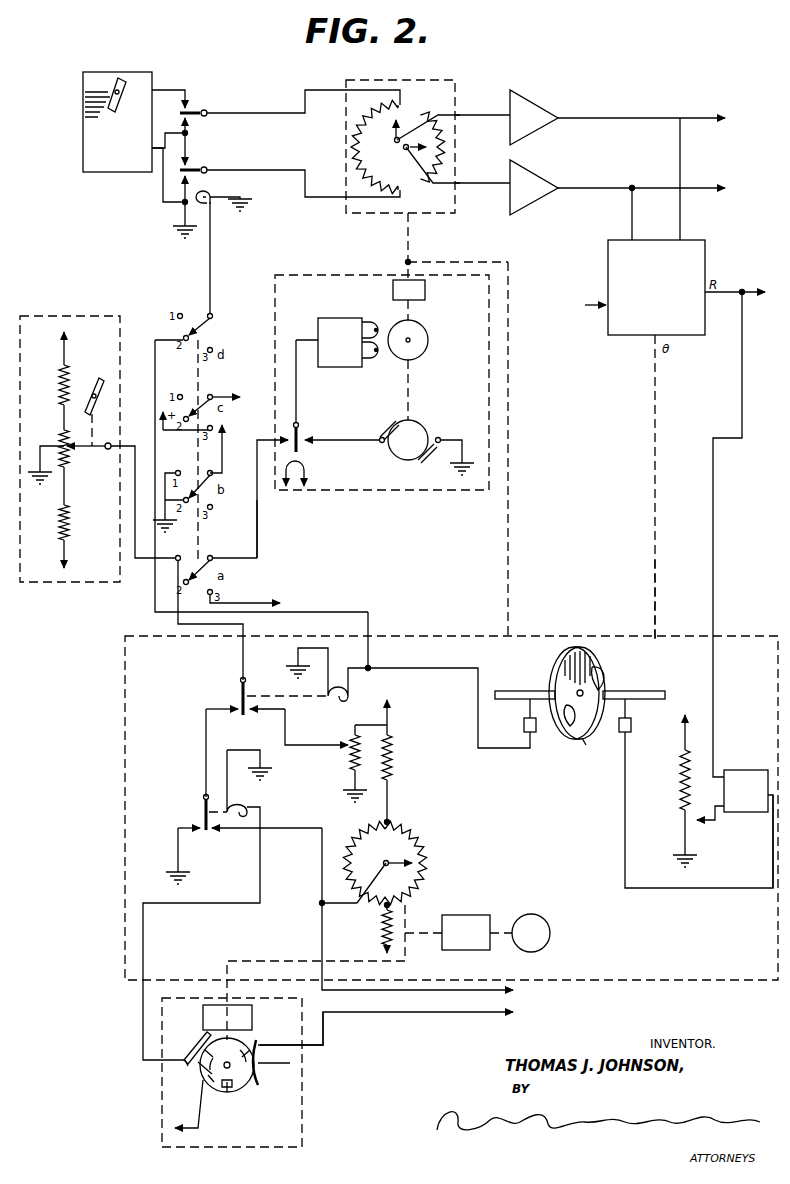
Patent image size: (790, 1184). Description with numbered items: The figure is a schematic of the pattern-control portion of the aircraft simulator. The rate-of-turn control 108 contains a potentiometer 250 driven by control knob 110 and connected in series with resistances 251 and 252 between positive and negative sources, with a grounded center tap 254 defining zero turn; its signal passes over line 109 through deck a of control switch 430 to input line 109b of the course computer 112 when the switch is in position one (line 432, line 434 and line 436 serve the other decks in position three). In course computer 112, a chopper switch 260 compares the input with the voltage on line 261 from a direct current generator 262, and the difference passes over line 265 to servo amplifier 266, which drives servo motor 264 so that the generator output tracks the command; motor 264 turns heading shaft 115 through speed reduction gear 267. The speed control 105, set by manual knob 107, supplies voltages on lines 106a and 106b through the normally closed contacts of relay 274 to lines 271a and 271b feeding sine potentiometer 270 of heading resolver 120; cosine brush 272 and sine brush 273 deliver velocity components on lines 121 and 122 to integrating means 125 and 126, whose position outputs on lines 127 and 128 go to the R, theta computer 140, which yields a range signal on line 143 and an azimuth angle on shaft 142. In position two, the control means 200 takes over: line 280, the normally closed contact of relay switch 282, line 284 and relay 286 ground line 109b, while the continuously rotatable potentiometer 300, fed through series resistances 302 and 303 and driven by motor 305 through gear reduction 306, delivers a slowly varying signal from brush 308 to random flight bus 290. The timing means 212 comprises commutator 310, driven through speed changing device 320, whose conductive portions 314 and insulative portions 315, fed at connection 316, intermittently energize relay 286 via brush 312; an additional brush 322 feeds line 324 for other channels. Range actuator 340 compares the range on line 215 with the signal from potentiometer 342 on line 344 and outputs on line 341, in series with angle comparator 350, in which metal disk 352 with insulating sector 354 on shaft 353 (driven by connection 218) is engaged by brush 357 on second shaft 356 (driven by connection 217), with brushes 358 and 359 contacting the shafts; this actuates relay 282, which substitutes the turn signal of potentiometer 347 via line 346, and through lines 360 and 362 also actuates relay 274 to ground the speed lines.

The speed control 105 is at (118, 72).
The manual knob 107 is at (118, 106).
The speed signal line 106a is at (185, 88).
The speed signal line 106b is at (163, 172).
The relay 274 is at (200, 108).
The resolver supply line 271a is at (258, 115).
The resolver supply line 271b is at (258, 171).
The relay connection line 362 is at (210, 290).
The heading resolver 120 is at (446, 80).
The sine potentiometer 270 is at (386, 108).
The cosine brush 272 is at (430, 108).
The sine brush 273 is at (445, 157).
The x velocity line 121 is at (500, 115).
The y velocity line 122 is at (470, 188).
The integrating means 125 is at (540, 100).
The integrating means 126 is at (528, 200).
The x position line 127 is at (628, 116).
The y position line 128 is at (610, 187).
The R, theta computer 140 is at (585, 305).
The range signal line 143 is at (745, 290).
The azimuth shaft 142 is at (655, 376).
The bearing connection 217 is at (655, 604).
The range line 215 is at (713, 707).
The heading shaft 115 is at (408, 243).
The heading connection 218 is at (508, 606).
The course computer 112 is at (330, 272).
The servo amplifier 266 is at (350, 318).
The difference voltage line 265 is at (297, 338).
The speed reduction gear 267 is at (425, 297).
The servo motor 264 is at (428, 338).
The chopper switch 260 is at (306, 438).
The generator voltage line 261 is at (332, 440).
The direct current generator 262 is at (428, 426).
The ground line 434 is at (222, 438).
The course computer input line 109b is at (257, 540).
The rate-of-turn control 108 is at (102, 316).
The resistance 251 is at (62, 397).
The potentiometer 250 is at (60, 436).
The grounded center tap 254 is at (60, 446).
The resistance 252 is at (61, 522).
The control knob 110 is at (100, 378).
The control switch 430 is at (135, 574).
The rate-of-turn signal line 109 is at (150, 598).
The positive voltage line 436 is at (224, 394).
The homing input line 432 is at (270, 603).
The control means 200 is at (770, 636).
The line 280 is at (245, 631).
The relay switch 282 is at (236, 698).
The relay connection line 360 is at (368, 614).
The line 284 is at (206, 745).
The turn signal line 346 is at (290, 714).
The potentiometer 347 is at (350, 765).
The series resistance 302 is at (392, 757).
The double throw relay switch 286 is at (200, 815).
The continuously rotatable potentiometer 300 is at (425, 840).
The potentiometer brush 308 is at (414, 861).
The series resistance 303 is at (382, 928).
The gear reduction 306 is at (478, 909).
The motor 305 is at (550, 937).
The random flight bus 290 is at (323, 950).
The line 324 is at (462, 1014).
The timing means 212 is at (305, 1142).
The speed changing device 320 is at (203, 1018).
The commutator 310 is at (246, 1100).
The brush 312 is at (204, 1046).
The insulative portions 315 is at (206, 1070).
The conductive portions 314 is at (210, 1080).
The voltage connection 316 is at (194, 1124).
The additional brush 322 is at (290, 1063).
The shaft 353 is at (500, 688).
The angle comparator 350 is at (556, 668).
The metal disk 352 is at (590, 660).
The brush 357 is at (606, 677).
The insulating sector 354 is at (586, 740).
The second shaft 356 is at (660, 690).
The brush 359 is at (631, 717).
The brush 358 is at (536, 732).
The range actuator 340 is at (752, 770).
The potentiometer 342 is at (680, 820).
The range comparison line 344 is at (718, 821).
The control signal line 341 is at (773, 862).